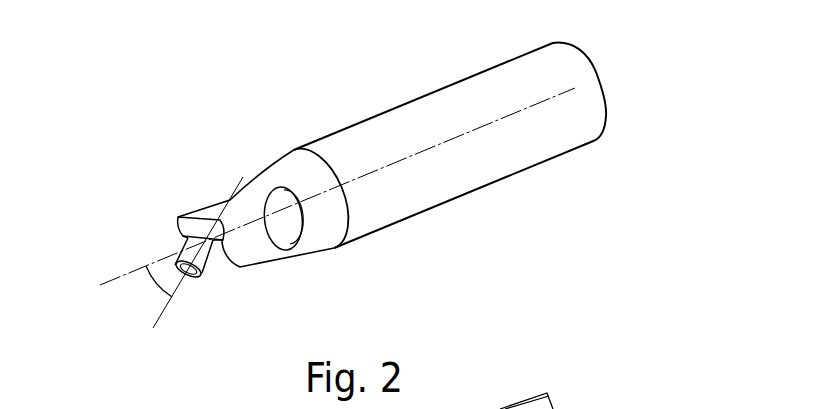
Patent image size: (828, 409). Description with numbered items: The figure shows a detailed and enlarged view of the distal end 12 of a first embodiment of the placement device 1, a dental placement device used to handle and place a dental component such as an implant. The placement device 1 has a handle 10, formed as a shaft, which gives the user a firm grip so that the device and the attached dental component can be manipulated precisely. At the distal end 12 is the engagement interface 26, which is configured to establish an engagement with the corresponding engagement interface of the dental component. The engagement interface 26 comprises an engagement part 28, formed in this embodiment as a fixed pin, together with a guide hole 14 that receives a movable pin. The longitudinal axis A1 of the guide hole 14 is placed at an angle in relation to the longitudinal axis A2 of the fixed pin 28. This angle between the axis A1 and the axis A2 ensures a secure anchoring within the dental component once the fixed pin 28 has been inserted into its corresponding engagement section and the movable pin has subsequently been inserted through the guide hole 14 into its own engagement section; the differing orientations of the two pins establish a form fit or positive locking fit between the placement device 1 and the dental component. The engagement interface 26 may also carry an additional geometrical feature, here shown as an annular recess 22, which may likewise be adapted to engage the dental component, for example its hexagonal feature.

The placement device 1 is at (344, 164).
The handle 10 is at (463, 195).
The distal end 12 is at (190, 253).
The guide hole 14 is at (177, 252).
The annular recess 22 is at (182, 219).
The engagement interface 26 is at (214, 300).
The engagement part 28 is at (208, 264).
The longitudinal axis of the guide hole A1 is at (112, 281).
The longitudinal axis of the fixed pin A2 is at (163, 316).